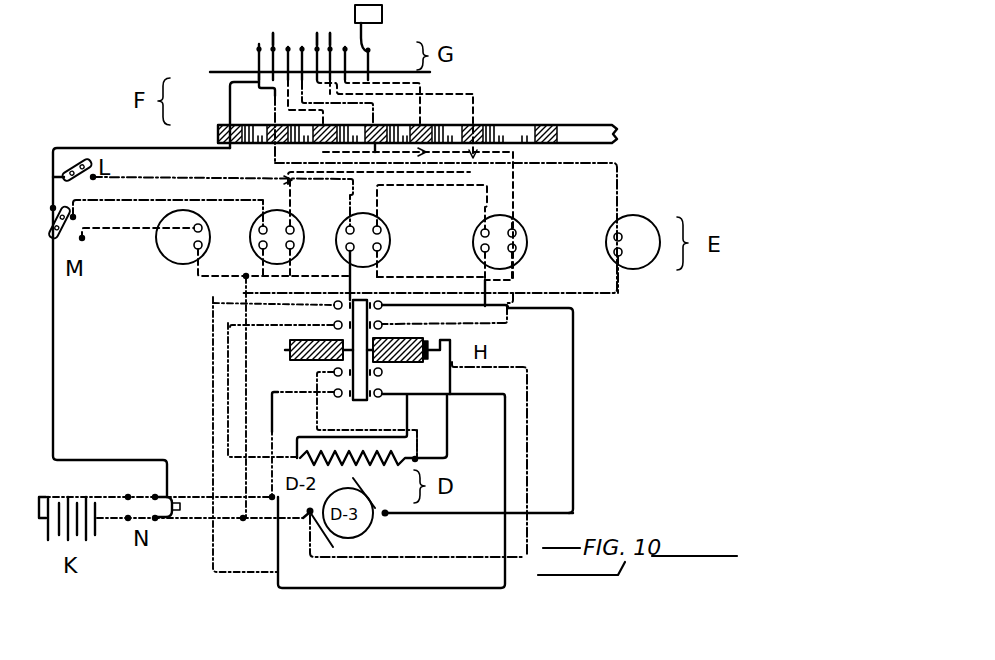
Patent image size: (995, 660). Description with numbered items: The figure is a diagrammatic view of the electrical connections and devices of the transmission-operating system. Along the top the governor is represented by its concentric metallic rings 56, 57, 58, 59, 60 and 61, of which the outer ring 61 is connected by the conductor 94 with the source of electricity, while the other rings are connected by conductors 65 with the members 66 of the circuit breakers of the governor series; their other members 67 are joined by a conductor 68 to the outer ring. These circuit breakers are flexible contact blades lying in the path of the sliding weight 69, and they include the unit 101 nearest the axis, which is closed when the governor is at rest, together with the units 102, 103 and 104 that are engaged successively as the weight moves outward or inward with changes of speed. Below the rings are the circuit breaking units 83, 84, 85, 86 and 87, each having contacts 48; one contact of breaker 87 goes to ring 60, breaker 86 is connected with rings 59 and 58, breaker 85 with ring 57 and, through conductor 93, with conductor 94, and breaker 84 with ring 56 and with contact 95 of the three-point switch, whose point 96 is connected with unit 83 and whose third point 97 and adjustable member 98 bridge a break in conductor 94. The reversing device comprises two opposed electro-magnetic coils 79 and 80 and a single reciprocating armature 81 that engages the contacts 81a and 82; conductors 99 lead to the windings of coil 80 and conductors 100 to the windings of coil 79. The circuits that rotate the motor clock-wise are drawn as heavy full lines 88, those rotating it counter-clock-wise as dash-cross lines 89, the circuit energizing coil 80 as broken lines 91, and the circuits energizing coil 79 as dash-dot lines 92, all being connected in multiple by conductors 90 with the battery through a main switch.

The contacts 48 is at (203, 228).
The metallic ring 56 is at (490, 127).
The metallic ring 57 is at (427, 127).
The metallic ring 58 is at (380, 127).
The metallic ring 59 is at (323, 127).
The metallic ring 60 is at (363, 173).
The outer ring 61 is at (275, 150).
The conductors 65 is at (390, 95).
The members of the circuit breakers 66 is at (257, 62).
The members of the circuit breakers 67 is at (257, 44).
The conductor 68 is at (230, 100).
The sliding weight 69 is at (384, 9).
The electro-magnetic coil 79 is at (413, 362).
The electro-magnetic coil 80 is at (290, 352).
The armature 81 is at (352, 400).
The contacts 81a is at (315, 379).
The contacts 82 is at (441, 349).
The circuit breaking unit 83 is at (175, 256).
The circuit breaker 84 is at (188, 228).
The circuit breaker 85 is at (372, 215).
The circuit breaking member 86 is at (516, 223).
The circuit breaker 87 is at (641, 217).
The circuits 88 is at (575, 384).
The circuits 89 is at (213, 370).
The conductors 90 is at (107, 496).
The circuit 91 is at (142, 232).
The circuits 92 is at (487, 200).
The conductor 93 is at (200, 177).
The conductor 94 is at (130, 140).
The contact of the three-point switch 95 is at (76, 217).
The point of the three-point switch 96 is at (80, 239).
The third point of the three-point switch 97 is at (51, 207).
The adjustable member of the three-point switch 98 is at (51, 226).
The conductors 99 is at (432, 277).
The conductors 100 is at (579, 293).
The circuit breaker 101 is at (374, 45).
The circuit breaker 102 is at (314, 42).
The circuit breaker unit 103 is at (268, 42).
The circuit breaker unit 104 is at (343, 43).